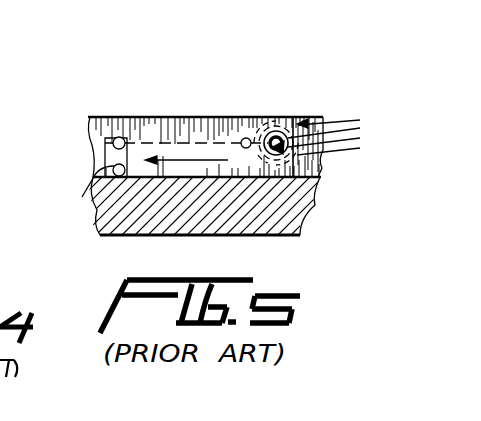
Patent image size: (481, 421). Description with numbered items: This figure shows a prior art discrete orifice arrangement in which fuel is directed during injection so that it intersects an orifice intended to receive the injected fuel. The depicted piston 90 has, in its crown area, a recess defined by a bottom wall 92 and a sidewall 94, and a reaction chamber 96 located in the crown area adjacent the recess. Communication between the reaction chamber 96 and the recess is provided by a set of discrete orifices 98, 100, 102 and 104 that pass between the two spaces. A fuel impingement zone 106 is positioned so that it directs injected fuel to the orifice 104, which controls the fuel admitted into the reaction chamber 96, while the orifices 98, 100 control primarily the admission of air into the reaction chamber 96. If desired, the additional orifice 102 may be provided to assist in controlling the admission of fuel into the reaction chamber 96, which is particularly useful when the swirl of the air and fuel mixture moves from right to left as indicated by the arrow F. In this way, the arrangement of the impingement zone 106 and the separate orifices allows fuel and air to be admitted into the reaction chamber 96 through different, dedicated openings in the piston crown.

The piston 90 is at (300, 232).
The bottom wall 92 is at (318, 177).
The sidewall 94 is at (225, 127).
The reaction chamber 96 is at (149, 125).
The discrete orifice 98 is at (122, 133).
The discrete orifice 100 is at (82, 197).
The additional orifice 102 is at (246, 137).
The orifice 104 is at (318, 150).
The fuel impingement zone 106 is at (283, 118).
The arrow F is at (178, 128).